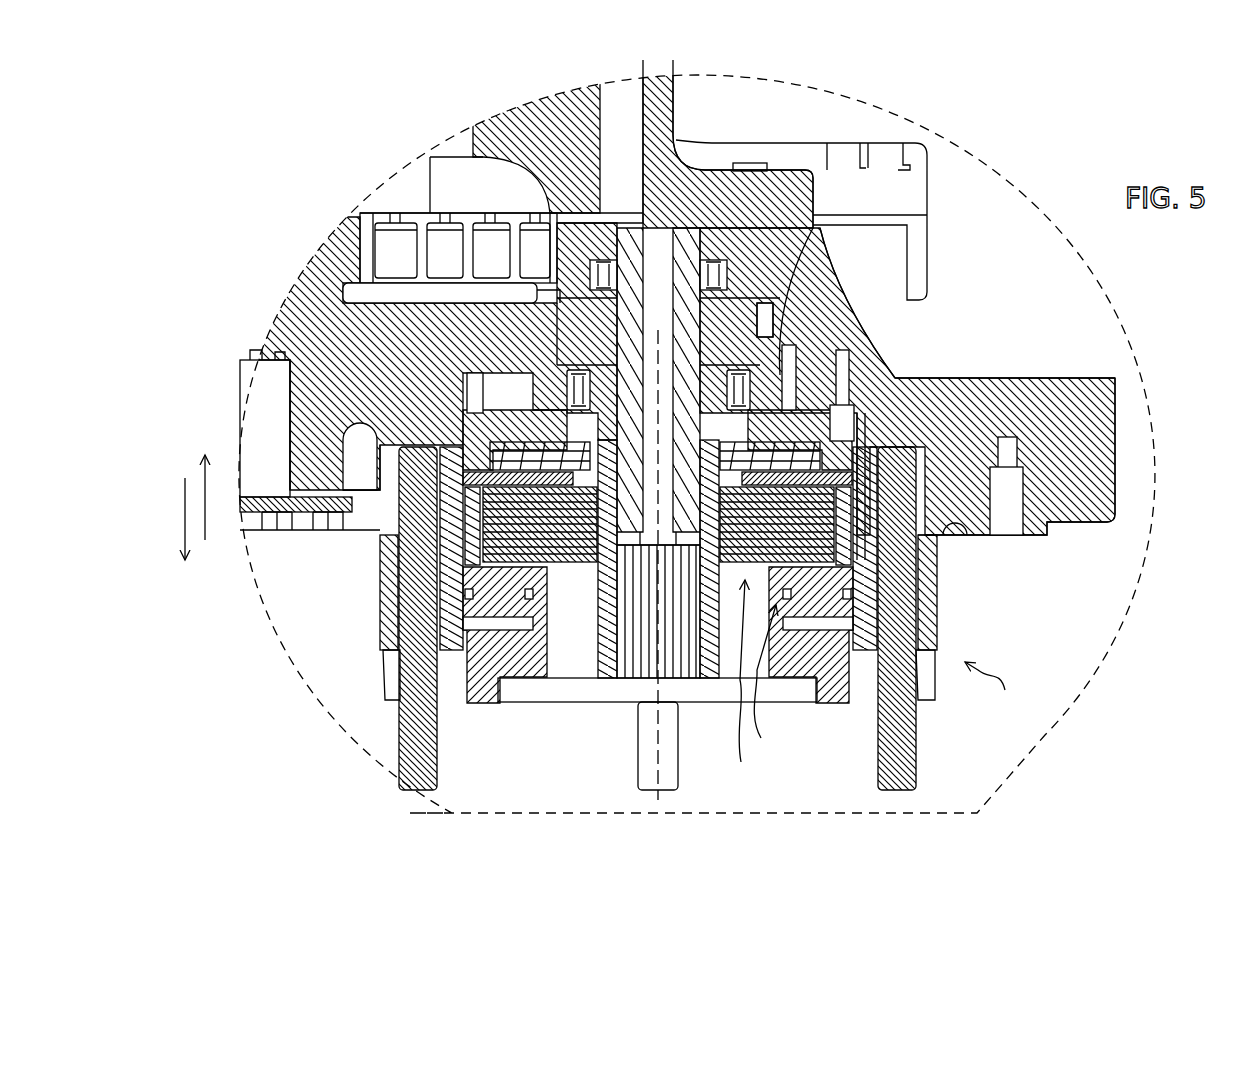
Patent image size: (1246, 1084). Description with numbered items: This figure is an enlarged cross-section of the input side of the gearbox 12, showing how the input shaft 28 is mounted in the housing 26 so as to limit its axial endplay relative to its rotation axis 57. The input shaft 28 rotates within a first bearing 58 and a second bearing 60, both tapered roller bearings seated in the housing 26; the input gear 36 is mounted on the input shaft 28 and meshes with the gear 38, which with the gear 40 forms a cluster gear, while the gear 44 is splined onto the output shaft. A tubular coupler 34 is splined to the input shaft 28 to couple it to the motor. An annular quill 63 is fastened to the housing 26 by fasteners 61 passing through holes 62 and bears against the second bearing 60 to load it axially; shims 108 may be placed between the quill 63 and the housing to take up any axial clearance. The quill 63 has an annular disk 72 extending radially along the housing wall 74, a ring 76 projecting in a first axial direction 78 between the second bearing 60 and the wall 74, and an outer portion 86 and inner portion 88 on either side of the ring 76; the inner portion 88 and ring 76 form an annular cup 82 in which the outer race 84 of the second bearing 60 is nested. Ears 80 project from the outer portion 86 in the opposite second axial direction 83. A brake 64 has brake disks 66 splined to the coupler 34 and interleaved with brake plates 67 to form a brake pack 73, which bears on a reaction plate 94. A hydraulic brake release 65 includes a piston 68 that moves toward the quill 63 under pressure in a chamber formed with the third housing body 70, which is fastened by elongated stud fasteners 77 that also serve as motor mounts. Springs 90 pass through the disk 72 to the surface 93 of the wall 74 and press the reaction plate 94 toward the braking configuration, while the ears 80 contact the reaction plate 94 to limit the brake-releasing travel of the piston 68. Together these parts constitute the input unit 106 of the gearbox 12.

The gearbox 12 is at (1043, 163).
The housing 26 is at (812, 128).
The input shaft 28 is at (688, 262).
The tubular coupler 34 is at (608, 660).
The input gear 36 is at (800, 290).
The gear 38 is at (388, 310).
The gear 40 is at (352, 240).
The gear 44 is at (497, 125).
The rotation axis 57 is at (637, 773).
The first bearing 58 is at (743, 262).
The second bearing 60 is at (800, 337).
The fasteners 61 is at (967, 403).
The hole 62 is at (945, 405).
The annular quill 63 is at (572, 478).
The brake 64 is at (741, 679).
The hydraulic brake release 65 is at (763, 679).
The brake disks 66 is at (700, 445).
The brake plates 67 is at (925, 540).
The piston 68 is at (497, 627).
The third housing body 70 is at (380, 608).
The annular disk 72 is at (793, 380).
The brake pack 73 is at (550, 573).
The housing wall 74 is at (500, 365).
The ring 76 is at (770, 345).
The fasteners 77 is at (410, 737).
The first axial direction 78 is at (185, 483).
The ear 80 is at (392, 365).
The annular cup 82 is at (533, 375).
The second axial direction 83 is at (208, 517).
The outer race 84 is at (553, 365).
The outer portion 86 is at (420, 370).
The inner portion 88 is at (558, 427).
The springs 90 is at (475, 362).
The surface 93 is at (903, 372).
The reaction plate 94 is at (920, 473).
The input unit 106 is at (1002, 670).
The shims 108 is at (935, 372).